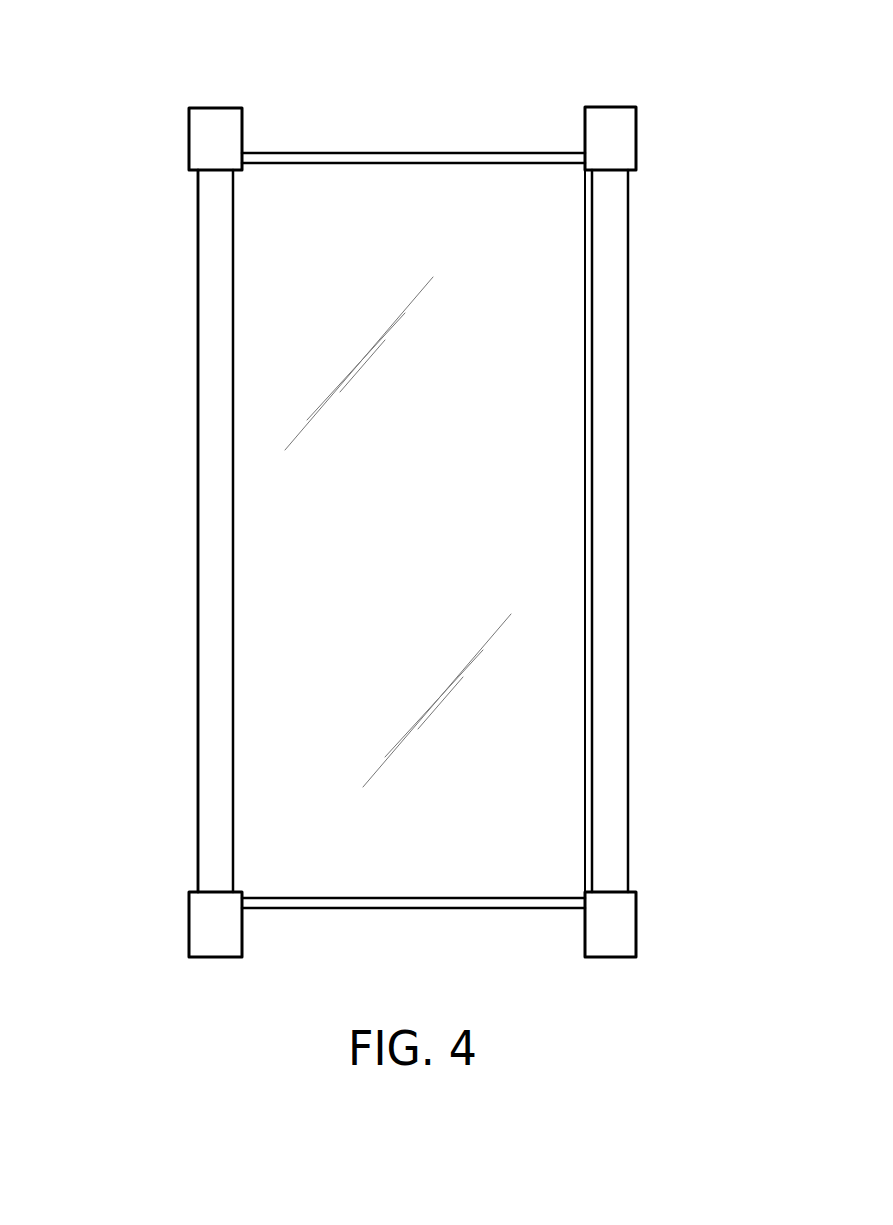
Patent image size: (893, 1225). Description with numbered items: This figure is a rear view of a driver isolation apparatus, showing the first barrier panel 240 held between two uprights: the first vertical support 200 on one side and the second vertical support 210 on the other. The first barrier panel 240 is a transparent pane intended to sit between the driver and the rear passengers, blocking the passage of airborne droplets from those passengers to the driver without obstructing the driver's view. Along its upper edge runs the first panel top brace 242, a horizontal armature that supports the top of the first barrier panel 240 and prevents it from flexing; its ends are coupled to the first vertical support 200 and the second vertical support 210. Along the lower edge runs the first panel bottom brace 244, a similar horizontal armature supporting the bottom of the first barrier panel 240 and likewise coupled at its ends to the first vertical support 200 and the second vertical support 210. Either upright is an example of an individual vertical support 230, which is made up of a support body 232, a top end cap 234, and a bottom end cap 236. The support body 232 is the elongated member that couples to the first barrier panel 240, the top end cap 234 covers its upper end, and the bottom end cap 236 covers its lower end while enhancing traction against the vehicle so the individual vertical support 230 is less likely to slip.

The first vertical support 200 is at (628, 352).
The second vertical support 210 is at (198, 390).
The individual vertical support 230 is at (260, 68).
The support body 232 is at (213, 508).
The top end cap 234 is at (189, 137).
The bottom end cap 236 is at (200, 922).
The first barrier panel 240 is at (275, 617).
The first panel top brace 242 is at (395, 155).
The first panel bottom brace 244 is at (413, 910).